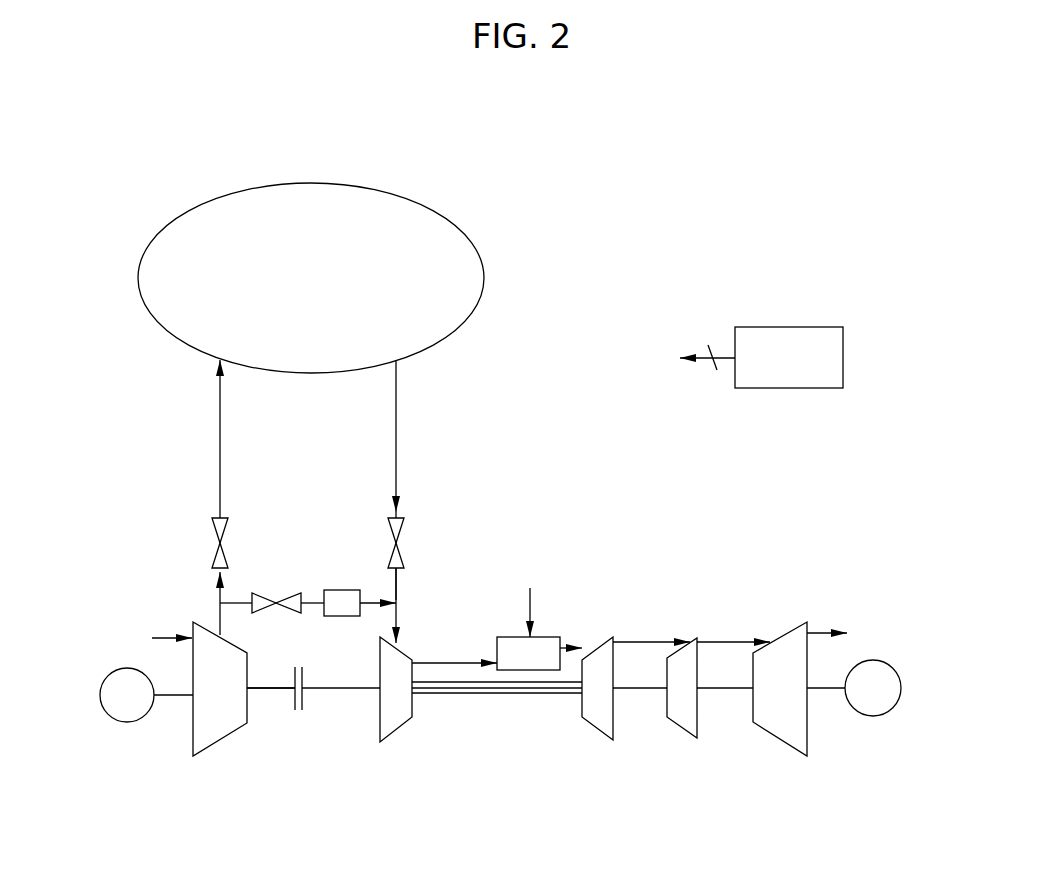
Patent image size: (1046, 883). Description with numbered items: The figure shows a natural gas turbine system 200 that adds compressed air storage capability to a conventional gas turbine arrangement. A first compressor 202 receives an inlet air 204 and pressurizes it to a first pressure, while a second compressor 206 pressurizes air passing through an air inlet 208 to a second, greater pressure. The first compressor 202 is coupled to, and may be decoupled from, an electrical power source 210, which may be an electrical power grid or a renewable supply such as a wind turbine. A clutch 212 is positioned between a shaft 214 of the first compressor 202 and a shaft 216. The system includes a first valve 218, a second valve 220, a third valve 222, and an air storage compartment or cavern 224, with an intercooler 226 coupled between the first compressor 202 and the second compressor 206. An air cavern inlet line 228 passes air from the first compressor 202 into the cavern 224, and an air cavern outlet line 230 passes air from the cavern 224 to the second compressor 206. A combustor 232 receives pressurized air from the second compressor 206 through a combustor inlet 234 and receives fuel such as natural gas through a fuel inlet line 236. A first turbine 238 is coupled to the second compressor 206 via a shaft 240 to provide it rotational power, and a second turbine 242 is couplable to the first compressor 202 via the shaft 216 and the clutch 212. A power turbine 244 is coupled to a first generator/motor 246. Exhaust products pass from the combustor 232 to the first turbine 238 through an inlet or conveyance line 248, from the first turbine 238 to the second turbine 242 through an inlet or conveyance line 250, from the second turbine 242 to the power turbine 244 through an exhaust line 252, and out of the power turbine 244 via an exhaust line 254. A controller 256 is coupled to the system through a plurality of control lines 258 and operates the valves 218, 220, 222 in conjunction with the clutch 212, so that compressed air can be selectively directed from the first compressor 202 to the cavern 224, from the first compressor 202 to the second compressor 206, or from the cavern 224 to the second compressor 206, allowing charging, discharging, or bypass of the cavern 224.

The system 200 is at (640, 270).
The first compressor 202 is at (215, 714).
The inlet air 204 is at (163, 635).
The second compressor 206 is at (395, 702).
The air inlet 208 is at (400, 617).
The electrical power source 210 is at (123, 712).
The clutch 212 is at (307, 698).
The shaft 214 is at (258, 690).
The shaft 216 is at (316, 687).
The first valve 218 is at (212, 530).
The second valve 220 is at (262, 598).
The third valve 222 is at (403, 530).
The air storage compartment or cavern 224 is at (332, 290).
The intercooler 226 is at (355, 590).
The air cavern inlet line 228 is at (221, 402).
The air cavern outlet line 230 is at (396, 388).
The combustor 232 is at (543, 638).
The combustor inlet 234 is at (420, 663).
The fuel inlet line 236 is at (529, 606).
The first turbine 238 is at (600, 712).
The shaft 240 is at (443, 697).
The second turbine 242 is at (680, 713).
The power turbine 244 is at (787, 725).
The first generator/motor 246 is at (873, 690).
The inlet or conveyance line 248 is at (567, 647).
The inlet or conveyance line 250 is at (633, 640).
The exhaust line 252 is at (723, 640).
The exhaust line 254 is at (817, 632).
The controller 256 is at (810, 369).
The control lines 258 is at (718, 355).